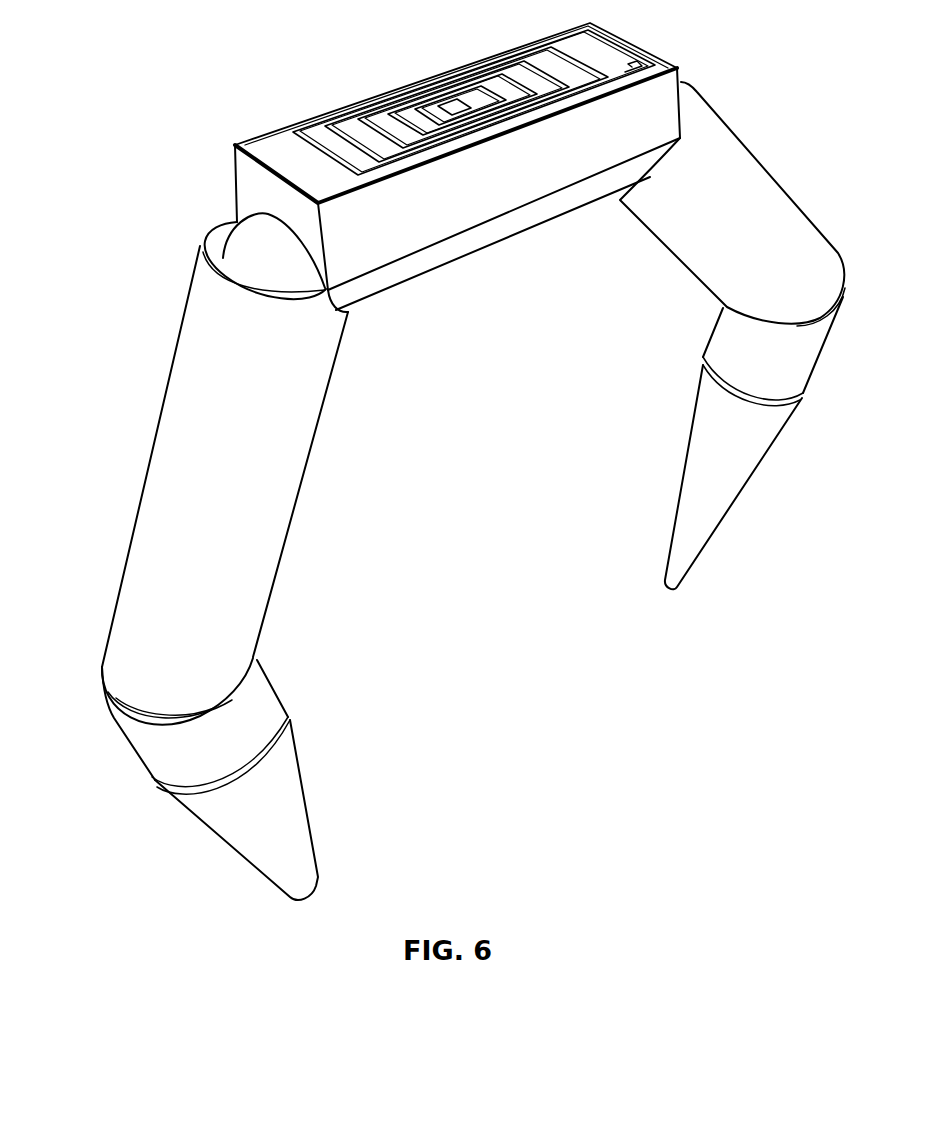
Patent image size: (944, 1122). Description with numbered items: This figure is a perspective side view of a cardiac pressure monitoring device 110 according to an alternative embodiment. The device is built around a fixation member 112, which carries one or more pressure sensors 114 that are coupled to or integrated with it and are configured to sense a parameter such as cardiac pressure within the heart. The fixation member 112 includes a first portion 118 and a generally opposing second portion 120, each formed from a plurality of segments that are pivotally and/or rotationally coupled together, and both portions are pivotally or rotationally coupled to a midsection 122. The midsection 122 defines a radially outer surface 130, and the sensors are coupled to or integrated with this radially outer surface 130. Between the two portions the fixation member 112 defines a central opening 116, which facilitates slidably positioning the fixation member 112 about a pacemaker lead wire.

The cardiac pressure monitoring device 110 is at (806, 176).
The fixation member 112 is at (118, 493).
The pressure sensor 114 is at (340, 110).
The central opening 116 is at (470, 515).
The first portion 118 is at (155, 386).
The second portion 120 is at (738, 120).
The midsection 122 is at (428, 266).
The radially outer surface 130 is at (257, 138).